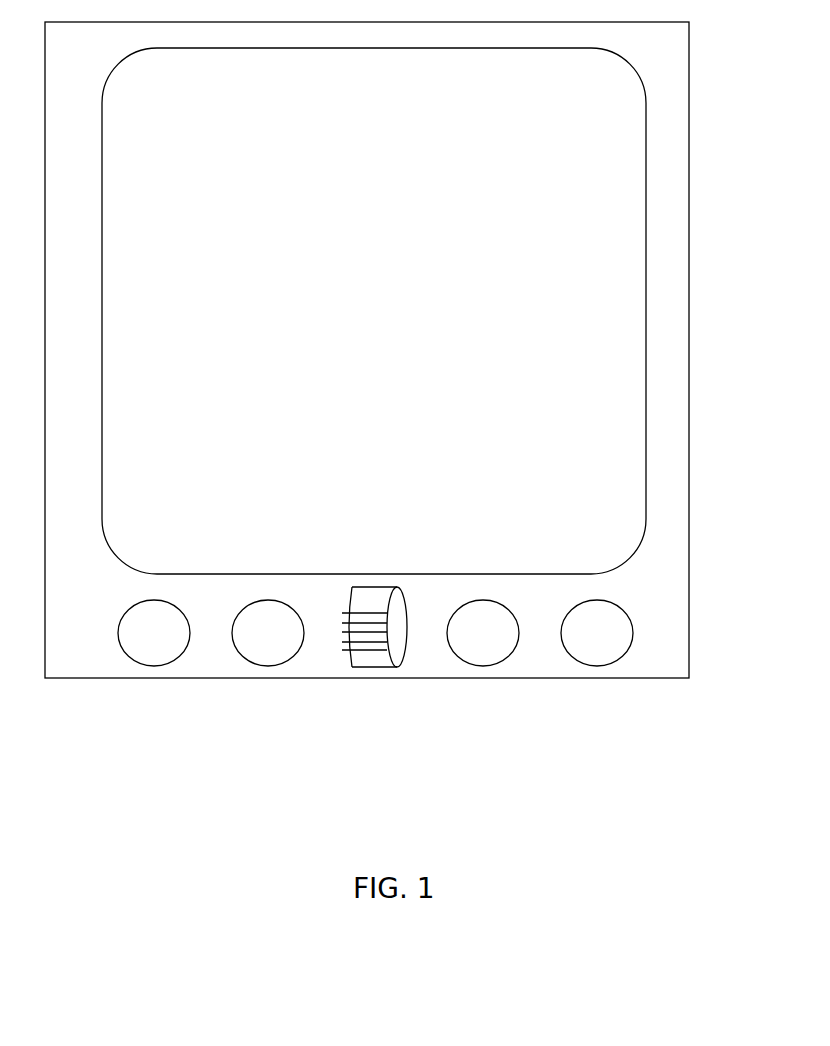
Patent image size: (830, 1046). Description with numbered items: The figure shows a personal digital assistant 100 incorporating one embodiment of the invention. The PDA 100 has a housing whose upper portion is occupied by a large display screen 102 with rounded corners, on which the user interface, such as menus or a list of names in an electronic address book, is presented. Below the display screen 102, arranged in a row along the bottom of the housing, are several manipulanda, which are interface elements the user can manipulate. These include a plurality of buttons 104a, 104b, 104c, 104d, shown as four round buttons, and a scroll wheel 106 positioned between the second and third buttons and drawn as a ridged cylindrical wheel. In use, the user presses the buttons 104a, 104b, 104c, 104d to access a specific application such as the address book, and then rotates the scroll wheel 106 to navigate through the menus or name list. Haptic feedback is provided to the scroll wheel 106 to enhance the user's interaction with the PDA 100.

The personal digital assistant 100 is at (689, 100).
The display screen 102 is at (646, 312).
The button 104a is at (155, 666).
The button 104b is at (255, 666).
The button 104c is at (475, 666).
The button 104d is at (595, 666).
The scroll wheel 106 is at (352, 667).